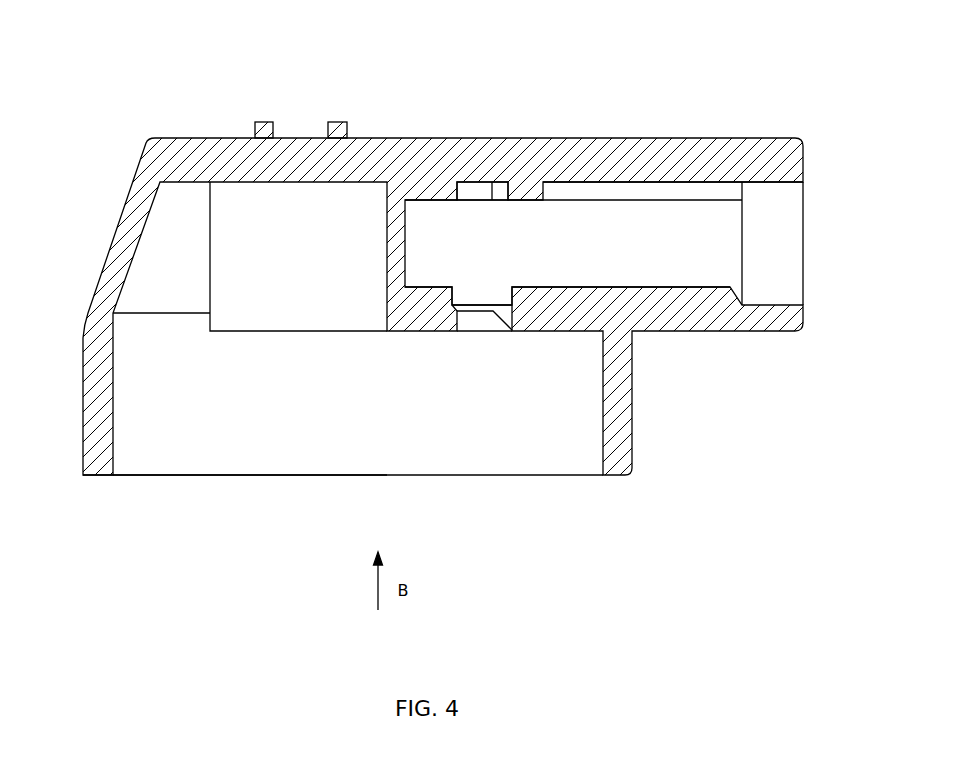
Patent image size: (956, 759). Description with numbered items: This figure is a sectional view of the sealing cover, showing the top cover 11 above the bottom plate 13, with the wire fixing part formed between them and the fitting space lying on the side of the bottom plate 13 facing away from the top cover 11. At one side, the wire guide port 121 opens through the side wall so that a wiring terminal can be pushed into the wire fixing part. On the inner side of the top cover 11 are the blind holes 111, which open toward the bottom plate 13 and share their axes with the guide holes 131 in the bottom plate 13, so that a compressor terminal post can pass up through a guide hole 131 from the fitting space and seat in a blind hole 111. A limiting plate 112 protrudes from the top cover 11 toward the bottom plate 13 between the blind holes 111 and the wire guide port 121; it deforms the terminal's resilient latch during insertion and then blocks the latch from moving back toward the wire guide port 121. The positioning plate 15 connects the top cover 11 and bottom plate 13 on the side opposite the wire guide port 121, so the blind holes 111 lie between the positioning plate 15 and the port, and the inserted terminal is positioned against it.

The top cover 11 is at (645, 130).
The blind hole 111 is at (457, 163).
The limiting plate 112 is at (528, 218).
The wire guide port 121 is at (821, 232).
The bottom plate 13 is at (706, 354).
The guide hole 131 is at (490, 347).
The positioning plate 15 is at (372, 303).